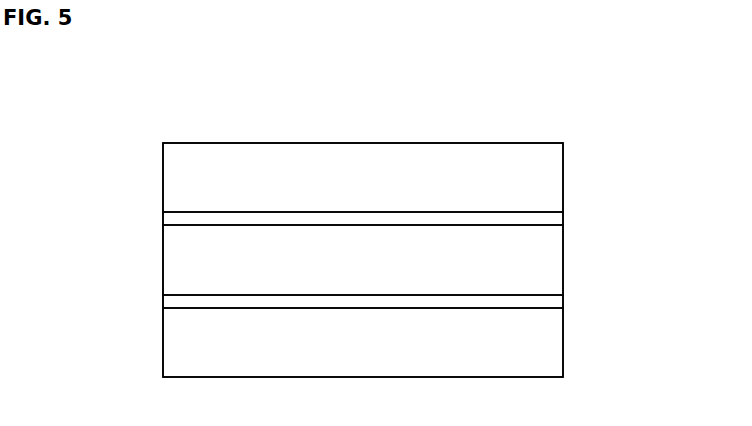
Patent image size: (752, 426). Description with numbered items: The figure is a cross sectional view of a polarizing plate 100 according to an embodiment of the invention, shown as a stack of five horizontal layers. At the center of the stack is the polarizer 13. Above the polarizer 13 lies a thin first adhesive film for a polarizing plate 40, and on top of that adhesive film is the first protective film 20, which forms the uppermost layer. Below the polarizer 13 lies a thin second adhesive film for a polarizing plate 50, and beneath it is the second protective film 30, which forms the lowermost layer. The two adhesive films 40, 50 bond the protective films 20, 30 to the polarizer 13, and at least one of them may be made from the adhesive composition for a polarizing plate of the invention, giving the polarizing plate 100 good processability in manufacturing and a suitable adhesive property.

The polarizing plate 100 is at (585, 123).
The first protective film 20 is at (545, 180).
The first adhesive film for a polarizing plate 40 is at (170, 219).
The polarizer 13 is at (545, 258).
The second adhesive film for a polarizing plate 50 is at (170, 303).
The second protective film 30 is at (545, 348).